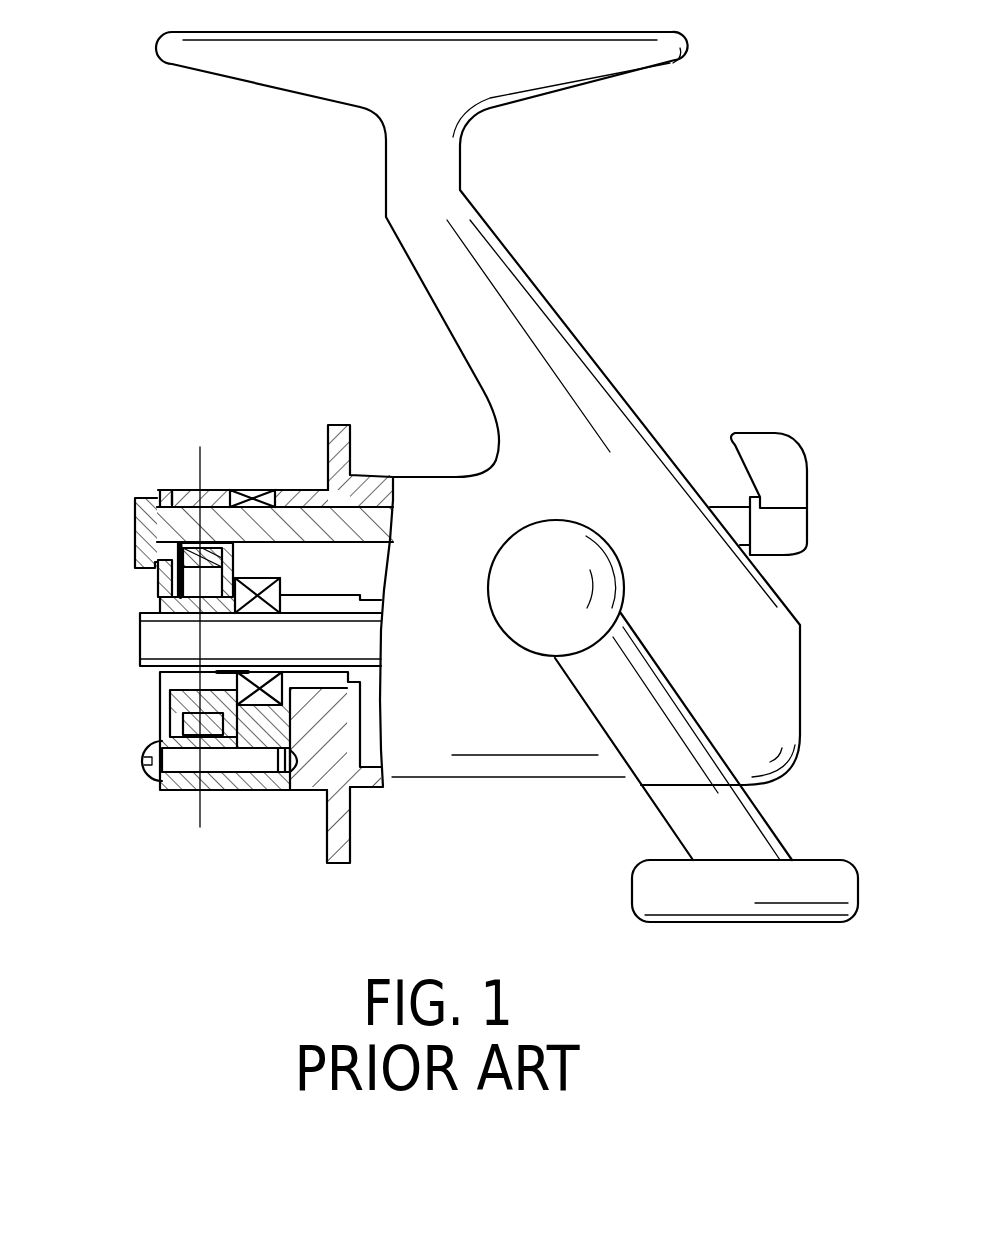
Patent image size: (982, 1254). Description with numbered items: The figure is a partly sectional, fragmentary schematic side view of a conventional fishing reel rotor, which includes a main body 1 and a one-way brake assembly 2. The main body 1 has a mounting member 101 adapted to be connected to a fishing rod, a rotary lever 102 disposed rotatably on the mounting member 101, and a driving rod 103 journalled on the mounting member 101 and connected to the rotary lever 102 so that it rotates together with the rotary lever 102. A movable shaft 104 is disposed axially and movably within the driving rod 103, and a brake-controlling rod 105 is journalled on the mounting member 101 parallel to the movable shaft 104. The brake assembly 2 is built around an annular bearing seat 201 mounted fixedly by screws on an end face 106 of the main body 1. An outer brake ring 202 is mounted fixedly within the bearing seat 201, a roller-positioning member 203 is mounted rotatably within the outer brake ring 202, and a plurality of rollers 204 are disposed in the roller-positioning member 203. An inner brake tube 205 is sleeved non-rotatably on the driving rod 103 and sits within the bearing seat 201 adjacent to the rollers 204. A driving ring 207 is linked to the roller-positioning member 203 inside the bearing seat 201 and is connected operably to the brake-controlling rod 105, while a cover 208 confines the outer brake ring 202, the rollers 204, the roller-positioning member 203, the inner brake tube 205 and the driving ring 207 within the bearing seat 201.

The main body 1 is at (600, 362).
The mounting member 101 is at (478, 242).
The rotary lever 102 is at (758, 832).
The driving rod 103 is at (163, 670).
The movable shaft 104 is at (153, 645).
The brake-controlling rod 105 is at (370, 515).
The end face 106 is at (250, 492).
The one-way brake assembly 2 is at (190, 818).
The annular bearing seat 201 is at (180, 490).
The outer brake ring 202 is at (222, 542).
The roller-positioning member 203 is at (228, 728).
The rollers 204 is at (168, 580).
The inner brake tube 205 is at (165, 603).
The driving ring 207 is at (177, 740).
The cover 208 is at (150, 498).